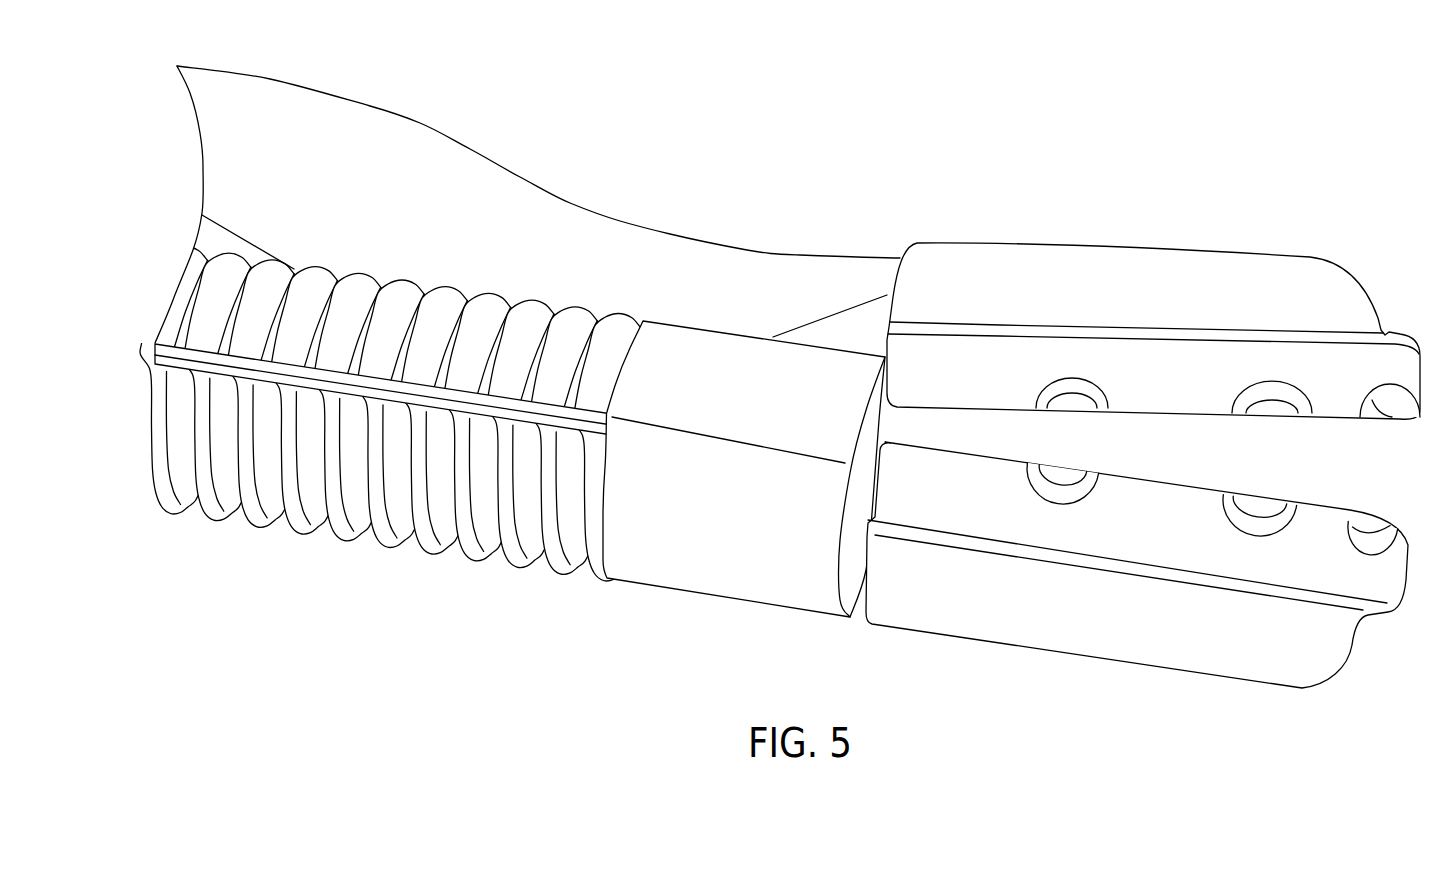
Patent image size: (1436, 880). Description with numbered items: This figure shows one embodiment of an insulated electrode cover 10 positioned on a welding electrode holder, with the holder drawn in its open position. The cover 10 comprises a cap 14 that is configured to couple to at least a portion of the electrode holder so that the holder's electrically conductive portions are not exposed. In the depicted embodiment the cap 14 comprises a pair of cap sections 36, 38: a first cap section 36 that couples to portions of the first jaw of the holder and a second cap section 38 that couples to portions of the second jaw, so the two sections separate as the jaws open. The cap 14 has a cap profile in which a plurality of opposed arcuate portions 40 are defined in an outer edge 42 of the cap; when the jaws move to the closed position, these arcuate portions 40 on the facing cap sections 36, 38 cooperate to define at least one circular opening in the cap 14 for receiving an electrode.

The insulated electrode cover 10 is at (1316, 152).
The cap 14 is at (1180, 265).
The first cap section 36 is at (1385, 333).
The second cap section 38 is at (1326, 655).
The opposed arcuate portions 40 is at (1078, 395).
The outer edge 42 is at (1190, 413).